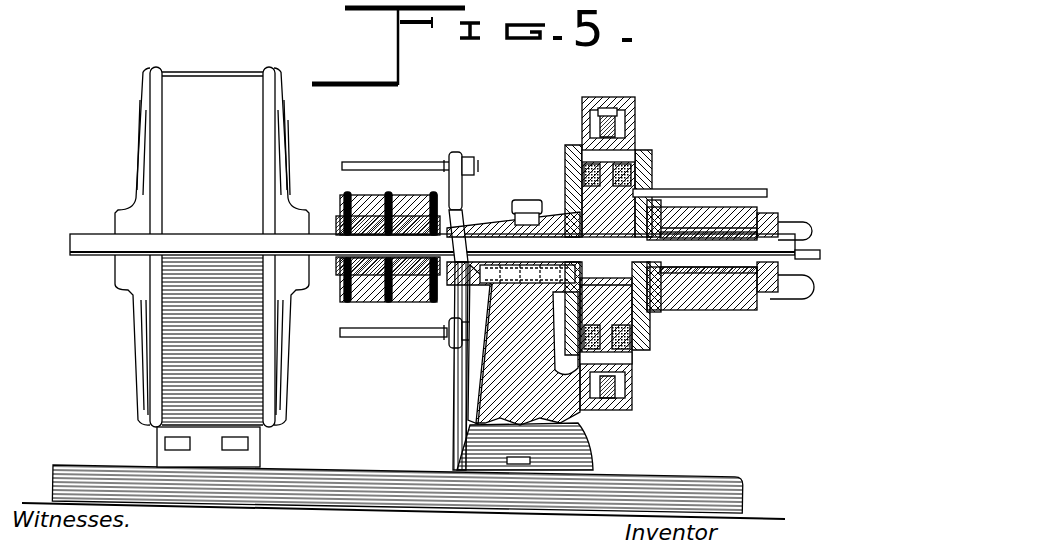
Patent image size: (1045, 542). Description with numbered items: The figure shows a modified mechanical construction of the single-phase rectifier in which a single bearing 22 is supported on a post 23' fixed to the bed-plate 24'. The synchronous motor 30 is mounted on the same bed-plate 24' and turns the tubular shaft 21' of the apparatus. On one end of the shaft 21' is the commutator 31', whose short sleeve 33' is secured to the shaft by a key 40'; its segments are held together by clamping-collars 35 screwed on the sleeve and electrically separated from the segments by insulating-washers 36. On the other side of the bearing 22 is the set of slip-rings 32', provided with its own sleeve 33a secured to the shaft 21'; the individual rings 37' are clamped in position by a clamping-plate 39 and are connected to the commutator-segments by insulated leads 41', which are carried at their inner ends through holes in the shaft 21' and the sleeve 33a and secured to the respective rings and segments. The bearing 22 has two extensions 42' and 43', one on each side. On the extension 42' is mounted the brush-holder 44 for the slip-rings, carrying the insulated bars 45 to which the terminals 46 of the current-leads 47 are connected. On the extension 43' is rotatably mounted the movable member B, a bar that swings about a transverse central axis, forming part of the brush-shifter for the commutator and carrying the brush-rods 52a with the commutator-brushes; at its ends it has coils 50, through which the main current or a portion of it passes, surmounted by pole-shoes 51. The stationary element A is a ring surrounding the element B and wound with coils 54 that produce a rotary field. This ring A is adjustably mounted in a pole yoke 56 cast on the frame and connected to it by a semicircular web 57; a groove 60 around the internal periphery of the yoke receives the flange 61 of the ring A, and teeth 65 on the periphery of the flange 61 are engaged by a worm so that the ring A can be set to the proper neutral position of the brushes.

The tubular shaft 21' is at (445, 220).
The bearing 22 is at (513, 299).
The post 23' is at (539, 447).
The bed-plate 24' is at (397, 503).
The synchronous motor 30 is at (212, 267).
The commutator 31' is at (750, 297).
The set of slip-rings 32' is at (388, 237).
The sleeve 33a is at (344, 226).
The short sleeve 33' is at (702, 276).
The clamping-collar 35 is at (682, 212).
The insulating-washer 36 is at (768, 205).
The slip-ring 37' is at (371, 259).
The clamping-plate 39 is at (341, 282).
The key 40' is at (793, 272).
The insulated lead 41' is at (788, 286).
The bearing extension 42' is at (482, 295).
The bearing extension 43' is at (704, 195).
The brush-holder 44 is at (446, 300).
The insulated bar 45 is at (373, 162).
The terminal 46 is at (460, 152).
The current-lead 47 is at (454, 405).
The coil 50 is at (632, 176).
The pole-shoe 51 is at (612, 160).
The brush-rod 52a is at (736, 189).
The coil 54 is at (568, 156).
The pole yoke 56 is at (637, 100).
The semicircular web 57 is at (584, 398).
The groove 60 is at (582, 118).
The flange 61 is at (637, 126).
The teeth 65 is at (611, 100).
The stationary element A is at (570, 136).
The movable member B is at (652, 332).